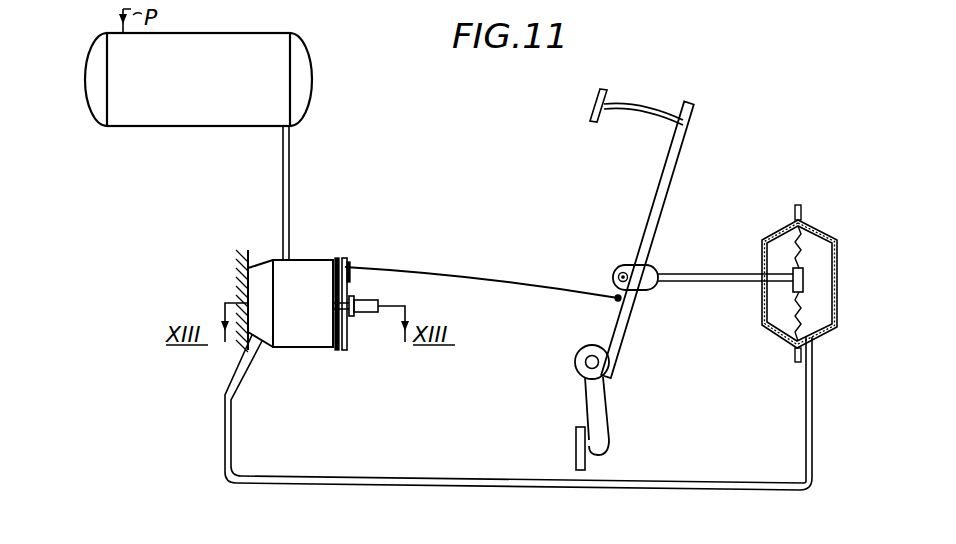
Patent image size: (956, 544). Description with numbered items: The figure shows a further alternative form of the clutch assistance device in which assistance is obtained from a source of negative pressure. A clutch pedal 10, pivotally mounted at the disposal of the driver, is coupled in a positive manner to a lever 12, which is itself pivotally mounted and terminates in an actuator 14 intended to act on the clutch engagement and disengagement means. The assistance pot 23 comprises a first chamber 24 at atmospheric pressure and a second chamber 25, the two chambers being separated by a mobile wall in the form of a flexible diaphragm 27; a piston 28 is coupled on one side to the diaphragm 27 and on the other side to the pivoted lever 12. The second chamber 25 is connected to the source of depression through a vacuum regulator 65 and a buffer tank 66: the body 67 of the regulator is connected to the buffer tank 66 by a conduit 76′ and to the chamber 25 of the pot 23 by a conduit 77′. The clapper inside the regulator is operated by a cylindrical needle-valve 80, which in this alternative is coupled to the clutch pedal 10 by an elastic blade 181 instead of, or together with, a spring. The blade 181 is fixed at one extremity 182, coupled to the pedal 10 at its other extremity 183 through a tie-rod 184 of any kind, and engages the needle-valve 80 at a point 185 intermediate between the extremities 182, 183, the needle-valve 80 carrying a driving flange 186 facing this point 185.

The buffer tank 66 is at (313, 71).
The conduit 76′ is at (292, 182).
The vacuum regulator 65 is at (313, 257).
The body 67 is at (308, 338).
The elastic blade 181 is at (351, 276).
The extremity 182 is at (340, 352).
The extremity 183 is at (345, 262).
The needle-valve 80 is at (356, 314).
The point 185 is at (348, 318).
The driving flange 186 is at (363, 296).
The tie-rod 184 is at (483, 285).
The clutch pedal 10 is at (689, 145).
The lever 12 is at (606, 412).
The actuator 14 is at (577, 427).
The piston 28 is at (694, 286).
The assistance pot 23 is at (760, 328).
The first chamber 24 is at (782, 245).
The second chamber 25 is at (817, 252).
The flexible diaphragm 27 is at (790, 340).
The conduit 77′ is at (395, 481).